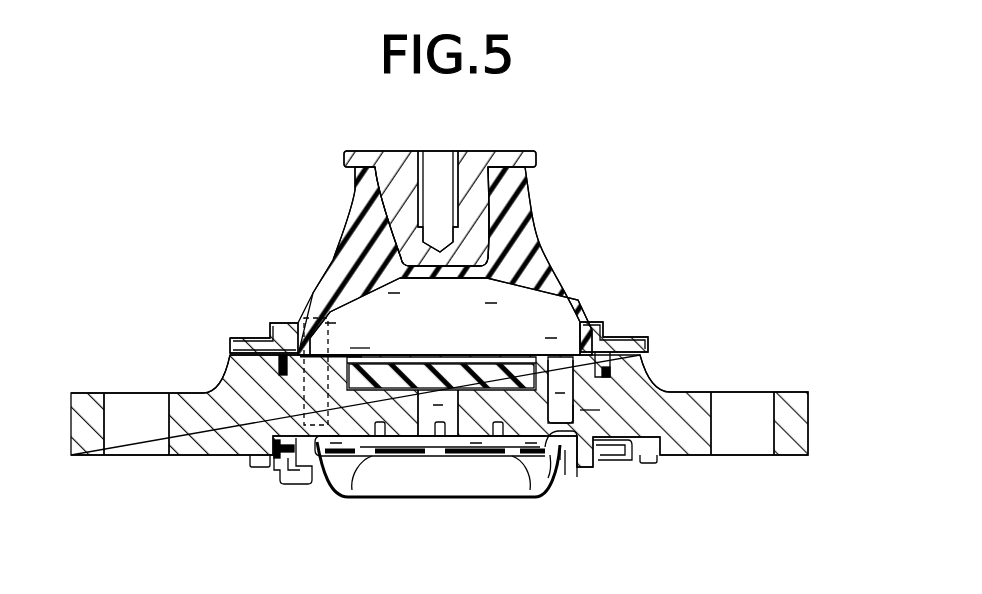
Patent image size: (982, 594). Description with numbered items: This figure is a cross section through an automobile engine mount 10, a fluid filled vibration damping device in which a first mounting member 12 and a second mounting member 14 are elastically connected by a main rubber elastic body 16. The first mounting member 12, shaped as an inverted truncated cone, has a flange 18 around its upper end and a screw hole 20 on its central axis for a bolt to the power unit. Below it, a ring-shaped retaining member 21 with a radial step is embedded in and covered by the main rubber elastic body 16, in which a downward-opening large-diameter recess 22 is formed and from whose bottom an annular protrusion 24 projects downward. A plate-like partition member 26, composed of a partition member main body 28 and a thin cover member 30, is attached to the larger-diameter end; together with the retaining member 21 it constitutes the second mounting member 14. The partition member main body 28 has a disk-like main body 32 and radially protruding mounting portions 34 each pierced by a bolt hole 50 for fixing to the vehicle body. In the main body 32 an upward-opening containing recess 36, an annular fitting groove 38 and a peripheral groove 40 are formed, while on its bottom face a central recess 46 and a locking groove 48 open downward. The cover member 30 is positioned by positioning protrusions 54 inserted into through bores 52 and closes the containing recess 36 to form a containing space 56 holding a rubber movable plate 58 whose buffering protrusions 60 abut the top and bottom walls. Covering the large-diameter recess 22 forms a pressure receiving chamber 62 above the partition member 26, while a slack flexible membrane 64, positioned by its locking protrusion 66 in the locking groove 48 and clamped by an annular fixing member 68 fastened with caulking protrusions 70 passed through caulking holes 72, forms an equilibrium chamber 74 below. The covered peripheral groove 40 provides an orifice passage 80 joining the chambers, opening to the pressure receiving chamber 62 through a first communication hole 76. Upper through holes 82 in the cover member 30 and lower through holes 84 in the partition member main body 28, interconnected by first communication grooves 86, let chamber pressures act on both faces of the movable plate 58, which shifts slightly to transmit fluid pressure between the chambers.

The engine mount 10 is at (558, 201).
The first mounting member 12 is at (405, 197).
The second mounting member 14 is at (634, 331).
The main rubber elastic body 16 is at (513, 268).
The flange 18 is at (366, 158).
The screw hole 20 is at (447, 180).
The retaining member 21 is at (253, 340).
The large-diameter recess 22 is at (400, 278).
The annular protrusion 24 is at (605, 365).
The partition member 26 is at (360, 344).
The partition member main body 28 is at (199, 379).
The cover member 30 is at (397, 355).
The main body 32 is at (240, 375).
The mounting portion 34 is at (193, 445).
The containing recess 36 is at (482, 448).
The fitting groove 38 is at (280, 370).
The peripheral groove 40 is at (575, 416).
The central recess 46 is at (557, 467).
The locking groove 48 is at (281, 446).
The bolt hole 50 is at (107, 435).
The through bore 52 is at (300, 438).
The positioning protrusion 54 is at (293, 360).
The containing space 56 is at (388, 447).
The movable plate 58 is at (514, 372).
The buffering protrusion 60 is at (350, 470).
The pressure receiving chamber 62 is at (441, 305).
The flexible membrane 64 is at (568, 463).
The locking protrusion 66 is at (597, 442).
The fixing member 68 is at (255, 464).
The caulking protrusion 70 is at (648, 463).
The caulking hole 72 is at (615, 462).
The equilibrium chamber 74 is at (540, 467).
The first communication hole 76 is at (295, 316).
The orifice passage 80 is at (558, 372).
The upper through hole 82 is at (418, 360).
The lower through hole 84 is at (428, 412).
The first communication groove 86 is at (380, 430).